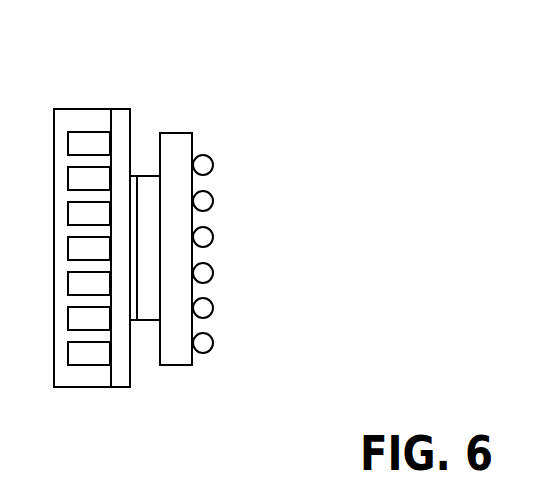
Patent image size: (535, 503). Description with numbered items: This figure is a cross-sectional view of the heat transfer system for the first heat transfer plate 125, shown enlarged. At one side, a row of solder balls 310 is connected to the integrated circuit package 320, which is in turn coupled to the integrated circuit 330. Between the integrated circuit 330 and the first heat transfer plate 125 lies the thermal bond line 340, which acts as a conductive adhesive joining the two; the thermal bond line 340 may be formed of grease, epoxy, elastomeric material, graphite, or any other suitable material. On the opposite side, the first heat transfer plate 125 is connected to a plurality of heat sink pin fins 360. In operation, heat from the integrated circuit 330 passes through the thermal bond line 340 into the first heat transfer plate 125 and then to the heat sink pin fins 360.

The first heat transfer plate 125 is at (114, 100).
The heat sink pin fins 360 is at (85, 376).
The thermal bond line 340 is at (137, 330).
The integrated circuit 330 is at (147, 176).
The solder balls 310 is at (213, 240).
The integrated circuit package 320 is at (185, 366).